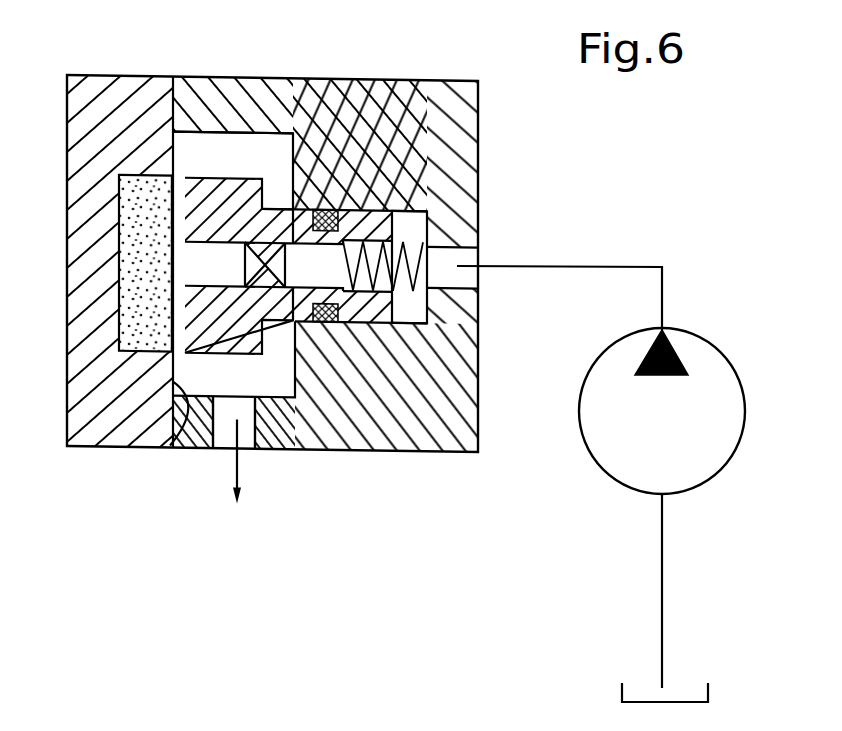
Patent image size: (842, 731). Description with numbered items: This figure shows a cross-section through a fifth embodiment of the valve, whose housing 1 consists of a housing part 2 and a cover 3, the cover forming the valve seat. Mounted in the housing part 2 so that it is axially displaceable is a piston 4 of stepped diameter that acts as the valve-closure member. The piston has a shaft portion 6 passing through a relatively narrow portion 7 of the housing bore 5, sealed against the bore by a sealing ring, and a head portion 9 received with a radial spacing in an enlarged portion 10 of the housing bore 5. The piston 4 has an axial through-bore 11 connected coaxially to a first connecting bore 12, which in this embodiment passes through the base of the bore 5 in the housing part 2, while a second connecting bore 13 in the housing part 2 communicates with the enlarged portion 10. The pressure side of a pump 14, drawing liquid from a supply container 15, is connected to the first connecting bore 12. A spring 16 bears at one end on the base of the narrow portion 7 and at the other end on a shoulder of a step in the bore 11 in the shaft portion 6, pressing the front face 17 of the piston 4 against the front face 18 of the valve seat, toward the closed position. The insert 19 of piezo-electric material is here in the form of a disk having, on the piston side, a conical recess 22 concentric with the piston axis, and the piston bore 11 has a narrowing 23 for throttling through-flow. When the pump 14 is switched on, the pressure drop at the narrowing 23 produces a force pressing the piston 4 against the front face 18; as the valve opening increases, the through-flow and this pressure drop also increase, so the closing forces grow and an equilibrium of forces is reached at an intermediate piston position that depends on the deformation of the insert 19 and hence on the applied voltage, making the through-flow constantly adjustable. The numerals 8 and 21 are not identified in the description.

The housing 1 is at (213, 66).
The housing part 2 is at (470, 440).
The cover 3 is at (84, 105).
The piston 4 is at (322, 281).
The housing bore 5 is at (273, 142).
The shaft portion 6 is at (377, 313).
The narrow portion of the housing bore 7 is at (447, 322).
The closure plug 8 is at (405, 95).
The head portion 9 is at (246, 332).
The enlarged portion of the housing bore 10 is at (226, 140).
The axial through-bore 11 is at (225, 248).
The first connecting bore 12 is at (475, 284).
The second connecting bore 13 is at (249, 450).
The pump 14 is at (620, 486).
The supply container 15 is at (710, 692).
The spring 16 is at (430, 222).
The front face of the piston 17 is at (185, 196).
The front face of the valve seat 18 is at (185, 412).
The insert 19 is at (119, 262).
The valve seat 21 is at (305, 152).
The conical recess 22 is at (172, 277).
The narrowing 23 is at (324, 211).